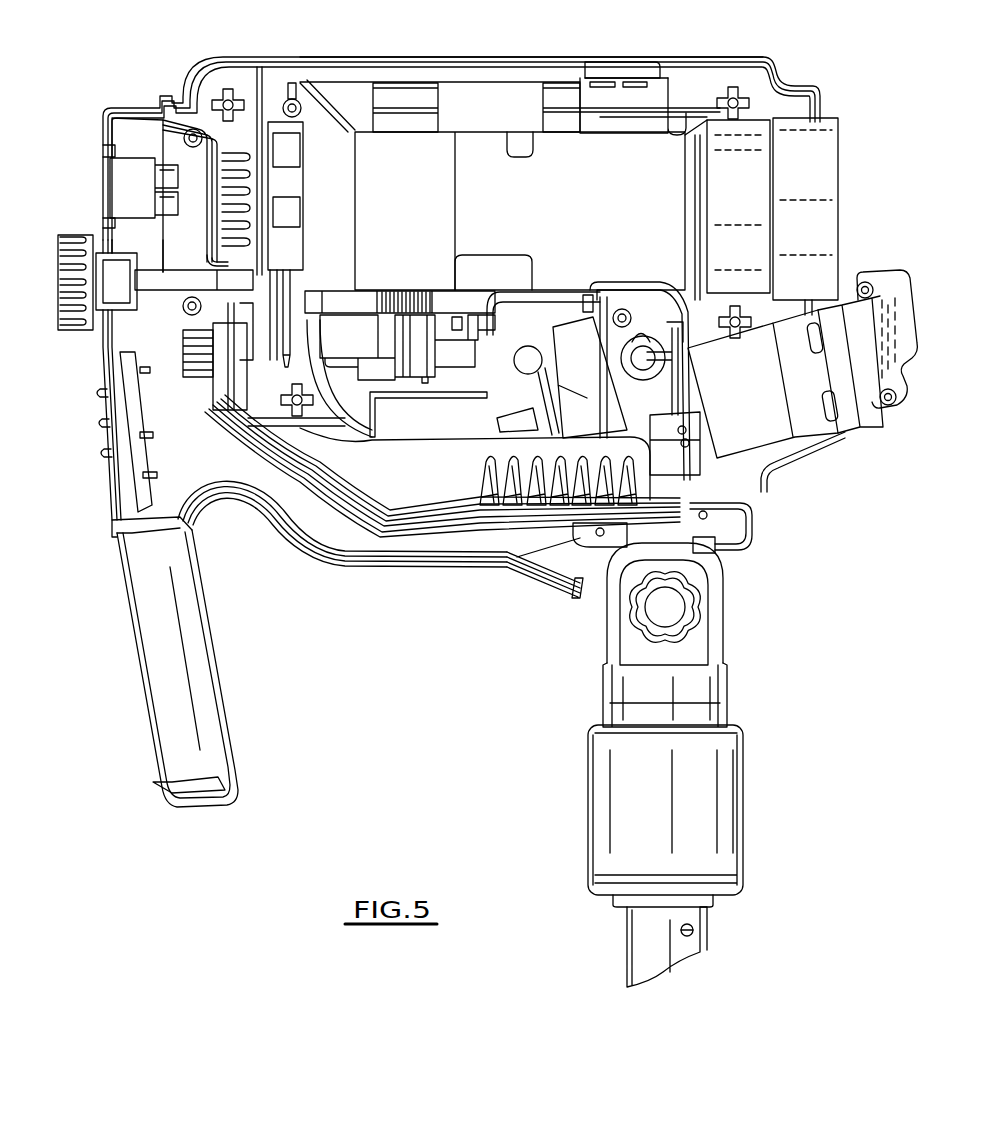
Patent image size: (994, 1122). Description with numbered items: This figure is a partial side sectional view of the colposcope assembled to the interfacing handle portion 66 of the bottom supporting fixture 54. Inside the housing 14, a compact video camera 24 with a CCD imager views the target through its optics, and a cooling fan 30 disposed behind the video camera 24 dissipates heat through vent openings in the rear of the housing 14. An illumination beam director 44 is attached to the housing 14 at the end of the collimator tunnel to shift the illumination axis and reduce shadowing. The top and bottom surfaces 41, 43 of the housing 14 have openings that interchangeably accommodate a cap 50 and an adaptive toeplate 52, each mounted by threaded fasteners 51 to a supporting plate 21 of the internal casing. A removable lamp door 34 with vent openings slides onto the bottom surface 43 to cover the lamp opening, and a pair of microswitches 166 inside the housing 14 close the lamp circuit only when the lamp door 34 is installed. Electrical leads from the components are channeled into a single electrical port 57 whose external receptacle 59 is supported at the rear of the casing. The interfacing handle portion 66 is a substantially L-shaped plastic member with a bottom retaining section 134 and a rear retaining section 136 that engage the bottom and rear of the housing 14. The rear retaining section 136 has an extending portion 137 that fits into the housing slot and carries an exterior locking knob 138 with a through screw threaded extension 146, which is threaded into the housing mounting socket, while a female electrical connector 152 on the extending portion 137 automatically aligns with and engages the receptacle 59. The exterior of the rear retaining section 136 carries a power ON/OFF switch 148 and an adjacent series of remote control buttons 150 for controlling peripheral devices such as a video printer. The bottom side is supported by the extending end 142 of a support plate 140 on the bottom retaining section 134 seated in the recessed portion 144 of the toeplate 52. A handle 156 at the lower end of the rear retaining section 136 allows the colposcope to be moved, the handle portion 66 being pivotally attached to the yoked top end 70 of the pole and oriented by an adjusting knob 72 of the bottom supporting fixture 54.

The housing 14 is at (303, 57).
The top surface 41 is at (462, 57).
The supporting plate 21 is at (577, 57).
The cap 50 is at (610, 62).
The threaded fasteners 51 is at (641, 86).
The video camera 24 is at (438, 148).
The cooling fan 30 is at (303, 137).
The interfacing handle portion 66 is at (125, 133).
The power ON/OFF switch 148 is at (120, 192).
The extending portion 137 is at (173, 243).
The exterior locking knob 138 is at (75, 298).
The screw threaded extension 146 is at (157, 283).
The female electrical connector 152 is at (150, 357).
The external electrical connecting receptacle 59 is at (227, 383).
The electrical port 57 is at (240, 370).
The remote control buttons 150 is at (97, 423).
The rear retaining section 136 is at (130, 510).
The handle 156 is at (155, 713).
The bottom surface 43 is at (380, 527).
The lamp door 34 is at (435, 503).
The bottom retaining section 134 is at (507, 547).
The support plate 140 is at (613, 540).
The adjusting knob 72 is at (680, 607).
The yoked top end 70 is at (713, 690).
The bottom supporting fixture 54 is at (643, 938).
The illumination beam director 44 is at (890, 272).
The microswitches 166 is at (687, 475).
The adaptive toeplate 52 is at (757, 500).
The recessed portion 144 is at (753, 510).
The extending end 142 is at (717, 523).